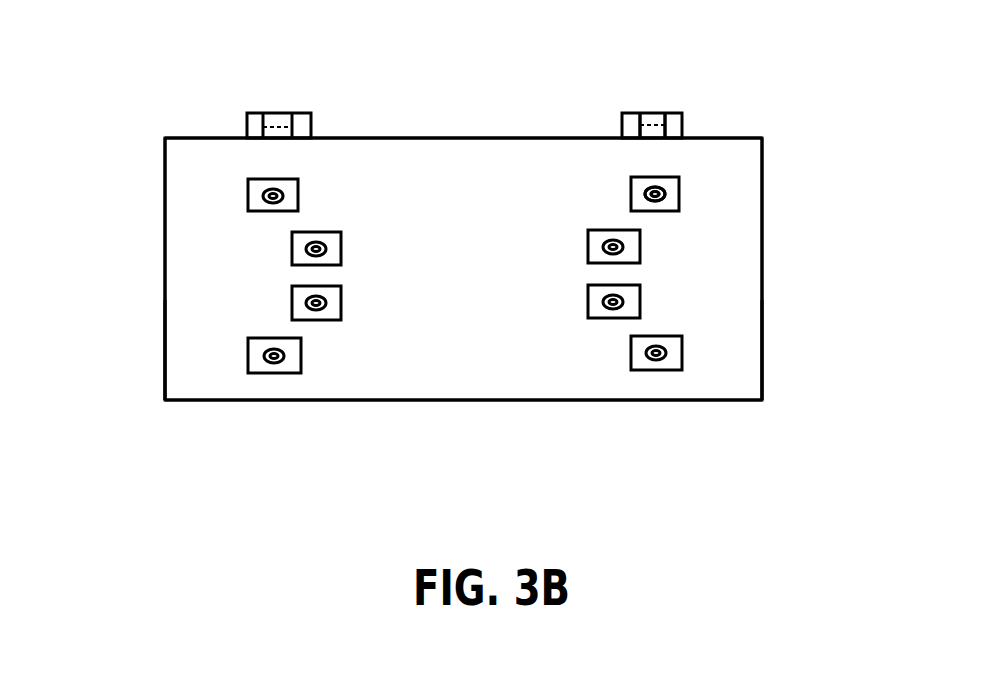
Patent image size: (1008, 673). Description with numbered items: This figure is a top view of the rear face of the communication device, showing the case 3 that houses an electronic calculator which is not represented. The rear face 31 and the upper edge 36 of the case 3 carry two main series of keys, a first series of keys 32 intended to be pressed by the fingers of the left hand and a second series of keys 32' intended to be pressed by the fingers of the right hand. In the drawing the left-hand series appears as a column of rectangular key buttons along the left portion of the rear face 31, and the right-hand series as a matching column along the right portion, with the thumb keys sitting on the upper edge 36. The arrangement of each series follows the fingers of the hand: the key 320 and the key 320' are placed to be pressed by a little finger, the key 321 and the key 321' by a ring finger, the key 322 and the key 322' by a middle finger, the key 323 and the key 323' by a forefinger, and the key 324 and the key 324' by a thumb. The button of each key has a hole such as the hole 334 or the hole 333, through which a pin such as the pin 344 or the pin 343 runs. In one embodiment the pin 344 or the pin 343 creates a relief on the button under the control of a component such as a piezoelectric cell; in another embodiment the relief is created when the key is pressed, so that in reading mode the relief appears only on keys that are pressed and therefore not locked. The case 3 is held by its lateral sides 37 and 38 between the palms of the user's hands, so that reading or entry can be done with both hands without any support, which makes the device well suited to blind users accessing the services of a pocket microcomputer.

The case 3 is at (480, 412).
The rear face 31 is at (414, 347).
The first series of keys 32 is at (118, 397).
The second series of keys 32' is at (813, 399).
The upper edge 36 is at (385, 137).
The lateral side 37 is at (162, 388).
The lateral side 38 is at (762, 392).
The little finger key 320 is at (746, 362).
The ring finger key 321 is at (722, 300).
The middle finger key 322 is at (725, 244).
The forefinger key 323 is at (744, 183).
The thumb key 324 is at (739, 120).
The little finger key 320' is at (186, 365).
The ring finger key 321' is at (206, 303).
The middle finger key 322' is at (205, 247).
The forefinger key 323' is at (182, 186).
The thumb key 324' is at (189, 121).
The hole 333 is at (650, 191).
The pin 343 is at (653, 190).
The hole 334 is at (657, 122).
The pin 344 is at (677, 118).